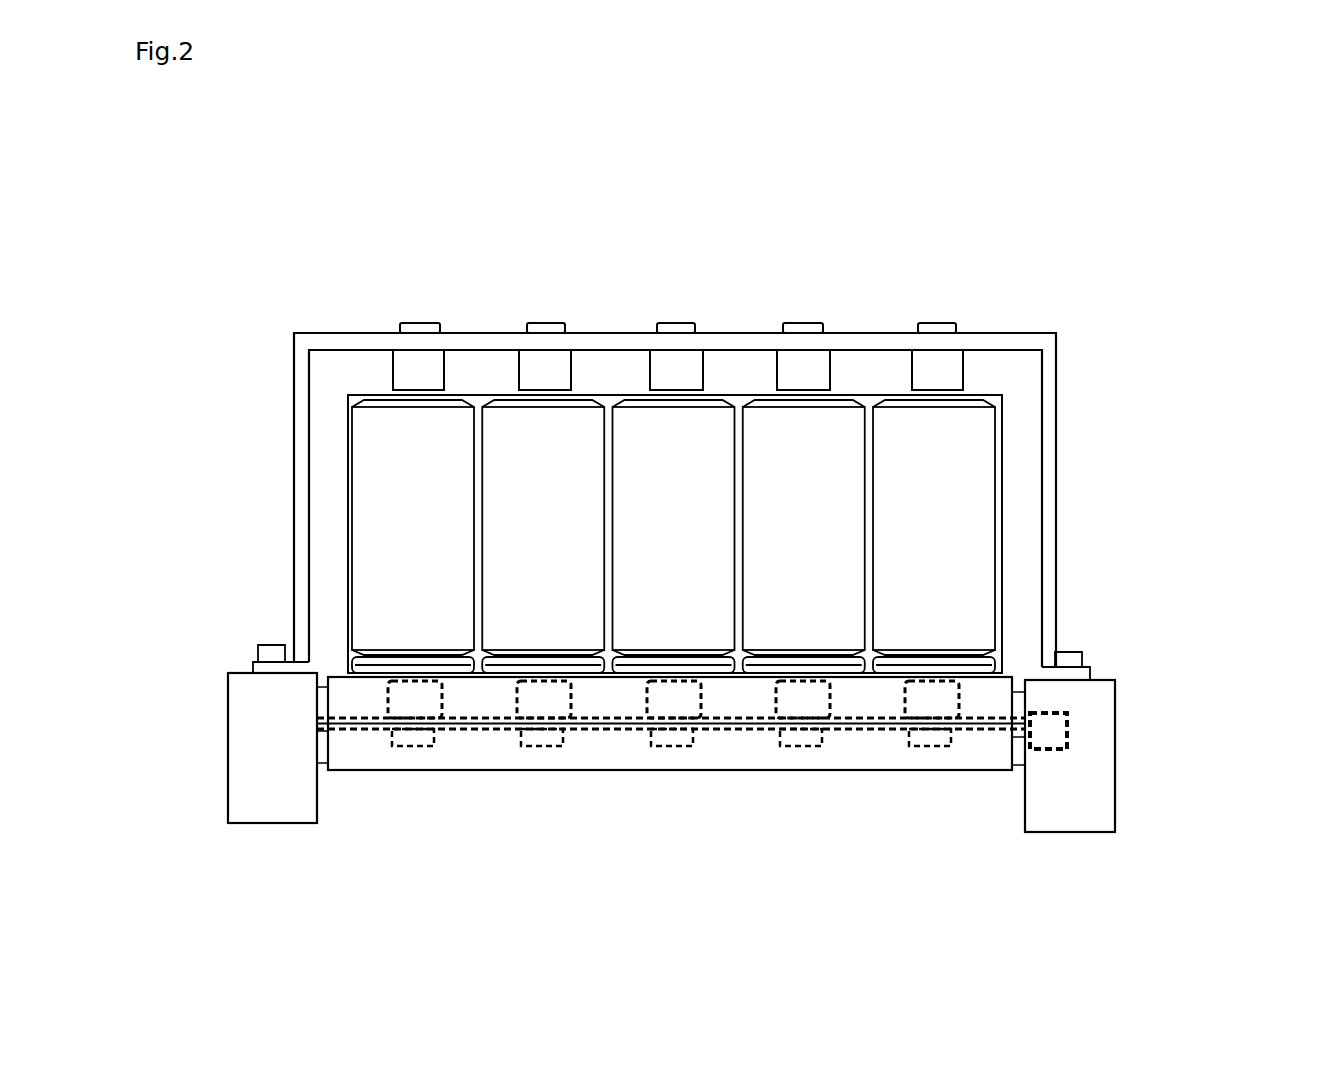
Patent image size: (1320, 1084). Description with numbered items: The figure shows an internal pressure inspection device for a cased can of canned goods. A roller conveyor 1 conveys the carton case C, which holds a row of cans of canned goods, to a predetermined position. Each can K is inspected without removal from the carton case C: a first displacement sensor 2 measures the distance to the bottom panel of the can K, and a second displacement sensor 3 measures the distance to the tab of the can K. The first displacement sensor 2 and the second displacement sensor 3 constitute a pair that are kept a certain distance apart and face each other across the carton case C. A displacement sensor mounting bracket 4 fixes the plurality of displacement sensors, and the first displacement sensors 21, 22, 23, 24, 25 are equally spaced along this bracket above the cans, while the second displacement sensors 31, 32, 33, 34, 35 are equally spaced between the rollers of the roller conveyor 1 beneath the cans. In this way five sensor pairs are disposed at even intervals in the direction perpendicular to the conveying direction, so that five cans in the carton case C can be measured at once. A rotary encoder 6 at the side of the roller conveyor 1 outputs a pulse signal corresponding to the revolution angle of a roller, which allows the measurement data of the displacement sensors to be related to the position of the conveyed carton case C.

The roller conveyor 1 is at (380, 770).
The first displacement sensor 2 is at (987, 242).
The first displacement sensor 21 is at (421, 320).
The first displacement sensor 22 is at (548, 320).
The first displacement sensor 23 is at (682, 320).
The first displacement sensor 24 is at (808, 320).
The first displacement sensor 25 is at (944, 320).
The second displacement sensor 3 is at (987, 855).
The second displacement sensor 31 is at (421, 757).
The second displacement sensor 32 is at (546, 757).
The second displacement sensor 33 is at (679, 757).
The second displacement sensor 34 is at (803, 757).
The second displacement sensor 35 is at (934, 757).
The displacement sensor mounting bracket 4 is at (380, 333).
The rotary encoder 6 is at (1073, 755).
The can K is at (980, 477).
The carton case C is at (1002, 500).